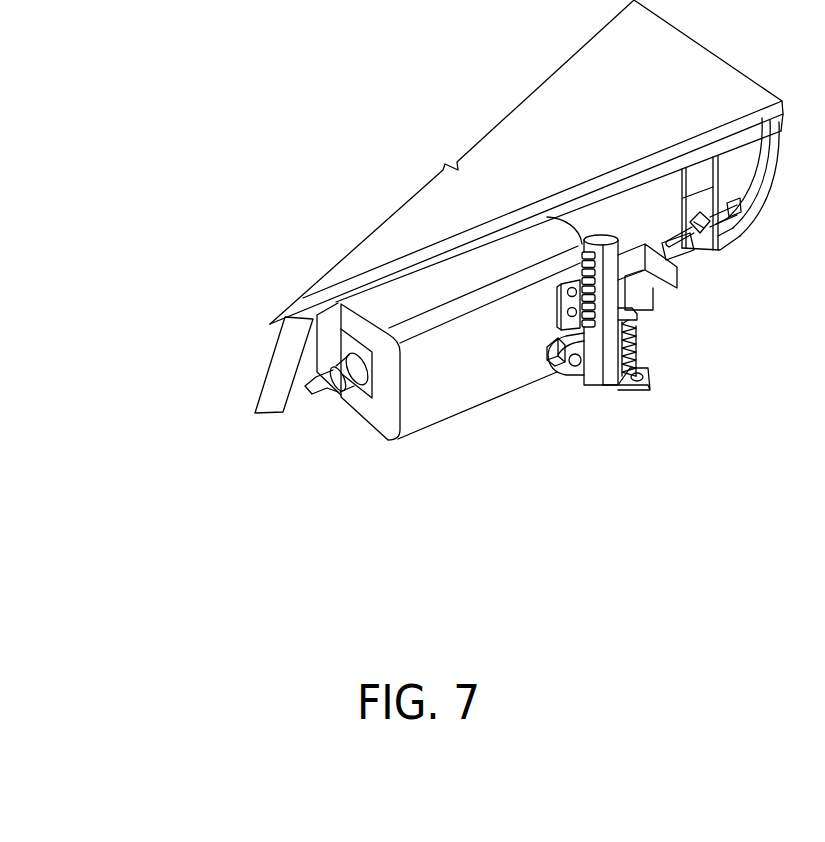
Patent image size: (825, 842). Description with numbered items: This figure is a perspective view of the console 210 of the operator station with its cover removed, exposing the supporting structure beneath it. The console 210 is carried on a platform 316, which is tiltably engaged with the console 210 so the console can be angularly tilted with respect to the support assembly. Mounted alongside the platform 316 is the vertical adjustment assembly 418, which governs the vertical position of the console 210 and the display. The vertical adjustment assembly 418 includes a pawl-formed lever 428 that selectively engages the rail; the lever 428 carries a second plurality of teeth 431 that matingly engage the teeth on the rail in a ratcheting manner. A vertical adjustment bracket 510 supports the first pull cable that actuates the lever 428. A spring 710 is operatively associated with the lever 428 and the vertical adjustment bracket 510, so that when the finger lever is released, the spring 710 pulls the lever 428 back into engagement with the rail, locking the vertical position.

The console 210 is at (278, 157).
The platform 316 is at (416, 432).
The vertical adjustment assembly 418 is at (678, 303).
The lever 428 is at (584, 378).
The second plurality of teeth 431 is at (556, 316).
The vertical adjustment bracket 510 is at (632, 297).
The spring 710 is at (642, 360).